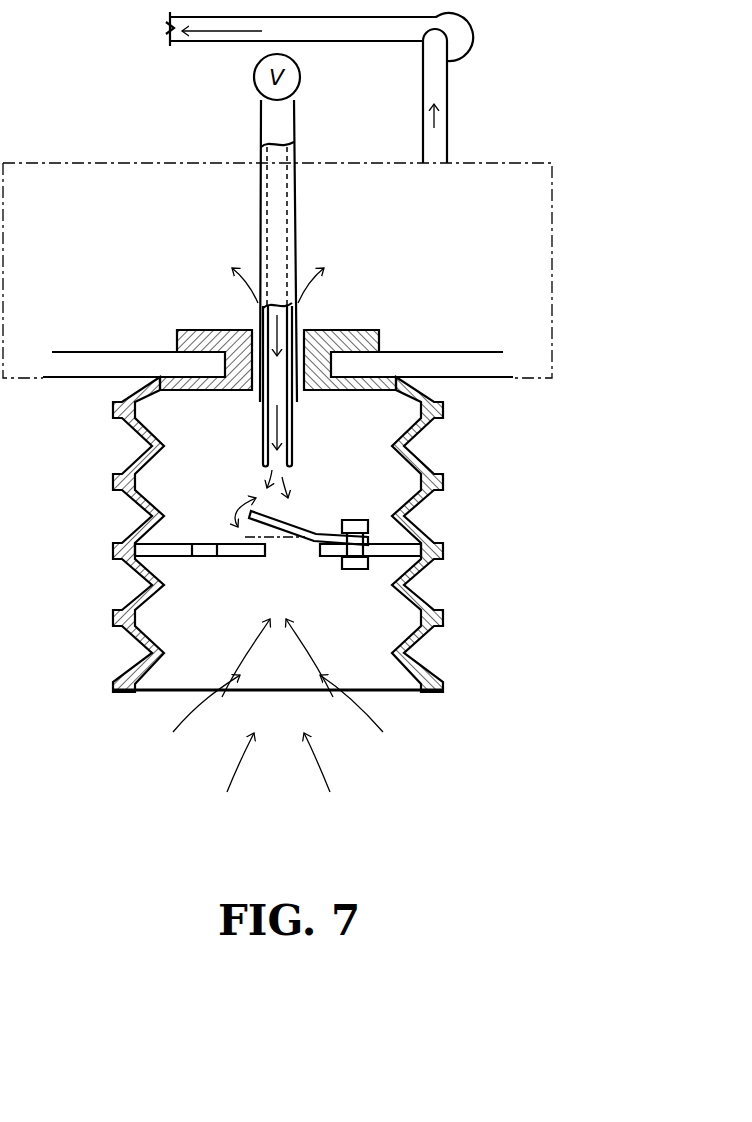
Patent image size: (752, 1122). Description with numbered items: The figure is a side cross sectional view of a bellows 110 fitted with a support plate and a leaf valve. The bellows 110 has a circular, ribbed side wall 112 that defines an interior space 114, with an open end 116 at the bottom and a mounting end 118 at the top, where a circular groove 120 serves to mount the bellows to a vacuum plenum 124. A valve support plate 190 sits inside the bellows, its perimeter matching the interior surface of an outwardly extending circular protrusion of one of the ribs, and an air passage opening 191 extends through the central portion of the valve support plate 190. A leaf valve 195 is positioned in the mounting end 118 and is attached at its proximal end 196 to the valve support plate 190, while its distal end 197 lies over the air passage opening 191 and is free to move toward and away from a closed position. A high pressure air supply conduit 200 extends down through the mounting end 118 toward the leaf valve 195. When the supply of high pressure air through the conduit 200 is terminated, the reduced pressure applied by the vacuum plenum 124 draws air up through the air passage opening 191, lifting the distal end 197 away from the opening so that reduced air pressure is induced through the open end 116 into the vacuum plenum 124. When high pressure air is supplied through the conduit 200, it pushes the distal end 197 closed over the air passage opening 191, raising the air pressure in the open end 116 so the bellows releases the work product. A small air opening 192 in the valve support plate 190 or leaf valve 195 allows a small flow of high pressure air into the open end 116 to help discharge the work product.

The bellows 110 is at (480, 487).
The circular, ribbed side wall 112 is at (99, 534).
The interior space 114 is at (278, 705).
The open end 116 is at (392, 691).
The mounting end 118 is at (228, 330).
The circular groove 120 is at (160, 352).
The vacuum plenum 124 is at (456, 252).
The valve support plate 190 is at (180, 543).
The air passage opening 191 is at (271, 557).
The air opening 192 is at (204, 557).
The leaf valve 195 is at (298, 522).
The proximal end 196 is at (372, 537).
The distal end 197 is at (266, 506).
The high pressure air supply conduit 200 is at (297, 237).